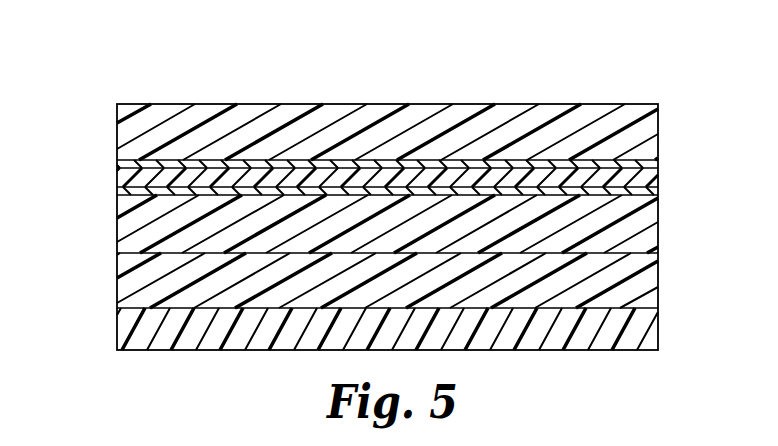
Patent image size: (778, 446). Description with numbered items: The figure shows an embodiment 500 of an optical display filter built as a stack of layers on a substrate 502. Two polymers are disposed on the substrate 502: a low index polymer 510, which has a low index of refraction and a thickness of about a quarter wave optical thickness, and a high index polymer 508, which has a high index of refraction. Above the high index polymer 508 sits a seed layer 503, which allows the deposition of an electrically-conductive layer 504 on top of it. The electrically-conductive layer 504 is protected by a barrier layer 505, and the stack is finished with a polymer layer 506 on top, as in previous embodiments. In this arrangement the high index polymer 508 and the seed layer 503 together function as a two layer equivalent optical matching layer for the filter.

The embodiment 500 is at (628, 76).
The substrate 502 is at (185, 340).
The seed layer 503 is at (118, 191).
The electrically-conductive layer 504 is at (117, 177).
The barrier layer 505 is at (117, 163).
The polymer layer 506 is at (160, 108).
The high index polymer 508 is at (124, 225).
The low index polymer 510 is at (125, 287).